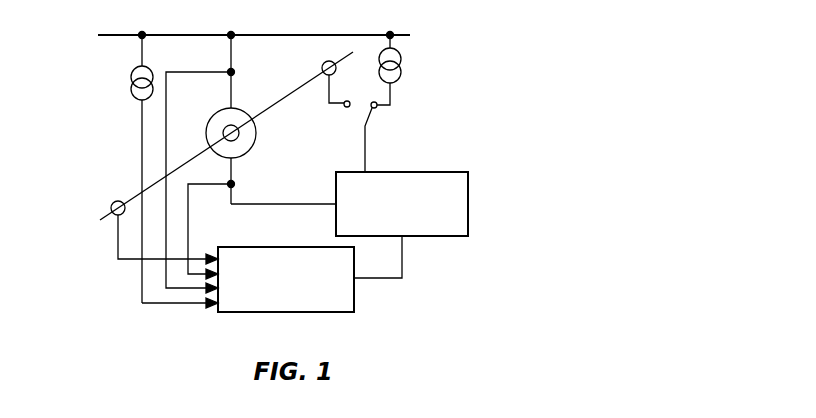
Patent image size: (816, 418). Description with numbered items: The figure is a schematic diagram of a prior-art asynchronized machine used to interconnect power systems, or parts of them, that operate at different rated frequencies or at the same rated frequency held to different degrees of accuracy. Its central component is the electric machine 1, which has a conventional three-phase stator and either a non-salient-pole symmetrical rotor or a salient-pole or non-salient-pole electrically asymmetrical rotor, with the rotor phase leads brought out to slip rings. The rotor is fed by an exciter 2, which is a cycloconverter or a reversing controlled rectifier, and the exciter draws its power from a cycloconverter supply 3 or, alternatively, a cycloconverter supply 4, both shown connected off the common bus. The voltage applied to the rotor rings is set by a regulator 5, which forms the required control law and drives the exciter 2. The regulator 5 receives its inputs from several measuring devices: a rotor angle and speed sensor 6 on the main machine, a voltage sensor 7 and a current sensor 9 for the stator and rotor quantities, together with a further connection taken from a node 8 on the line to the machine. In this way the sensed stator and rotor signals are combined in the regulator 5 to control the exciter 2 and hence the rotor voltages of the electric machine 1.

The electric machine 1 is at (335, 119).
The exciter 2 is at (395, 231).
The cycloconverter supply 3 is at (397, 103).
The cycloconverter supply 4 is at (329, 73).
The regulator 5 is at (279, 303).
The rotor angle and speed sensor 6 is at (158, 220).
The voltage sensor 7 is at (162, 171).
The node 8 is at (211, 178).
The current sensor 9 is at (222, 226).